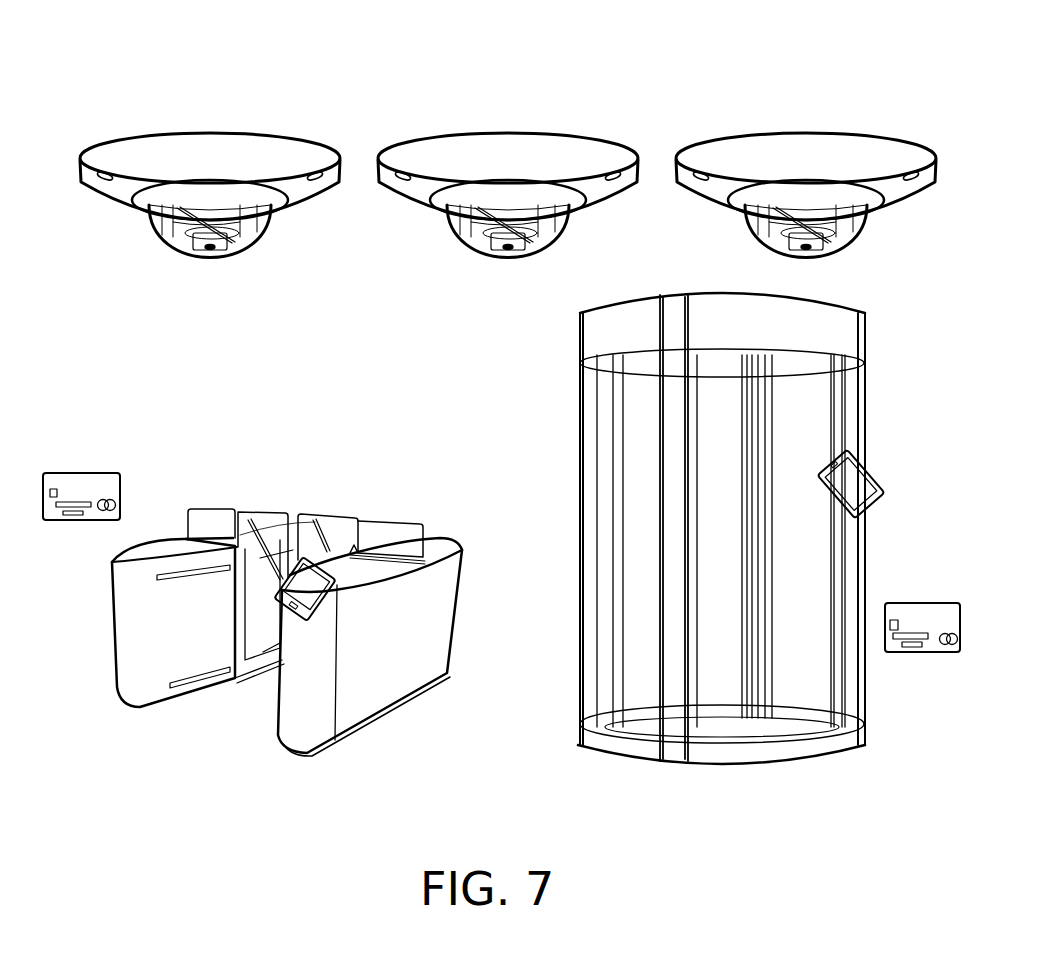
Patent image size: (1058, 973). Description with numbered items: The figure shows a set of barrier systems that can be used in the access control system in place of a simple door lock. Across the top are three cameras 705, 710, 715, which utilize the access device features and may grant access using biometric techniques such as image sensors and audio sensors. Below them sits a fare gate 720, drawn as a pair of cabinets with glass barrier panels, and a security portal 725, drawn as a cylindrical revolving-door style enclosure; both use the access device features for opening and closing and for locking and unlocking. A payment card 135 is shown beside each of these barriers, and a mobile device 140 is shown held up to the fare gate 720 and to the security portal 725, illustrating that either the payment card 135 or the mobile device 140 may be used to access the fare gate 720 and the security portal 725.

The camera 705 is at (210, 142).
The camera 710 is at (508, 142).
The camera 715 is at (806, 142).
The fare gate 720 is at (330, 513).
The security portal 725 is at (578, 418).
The payment card 135 is at (86, 472).
The mobile device 140 is at (327, 597).